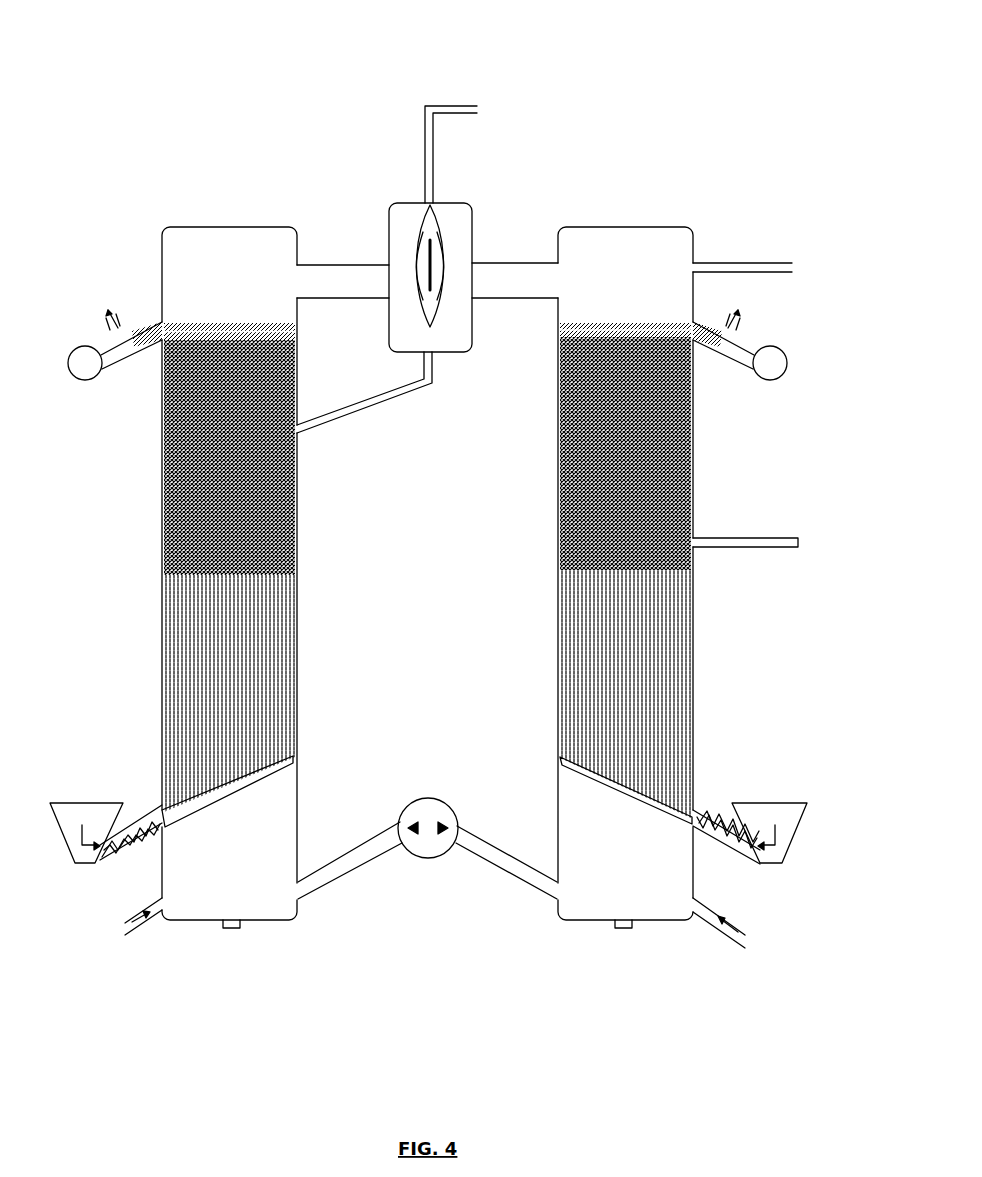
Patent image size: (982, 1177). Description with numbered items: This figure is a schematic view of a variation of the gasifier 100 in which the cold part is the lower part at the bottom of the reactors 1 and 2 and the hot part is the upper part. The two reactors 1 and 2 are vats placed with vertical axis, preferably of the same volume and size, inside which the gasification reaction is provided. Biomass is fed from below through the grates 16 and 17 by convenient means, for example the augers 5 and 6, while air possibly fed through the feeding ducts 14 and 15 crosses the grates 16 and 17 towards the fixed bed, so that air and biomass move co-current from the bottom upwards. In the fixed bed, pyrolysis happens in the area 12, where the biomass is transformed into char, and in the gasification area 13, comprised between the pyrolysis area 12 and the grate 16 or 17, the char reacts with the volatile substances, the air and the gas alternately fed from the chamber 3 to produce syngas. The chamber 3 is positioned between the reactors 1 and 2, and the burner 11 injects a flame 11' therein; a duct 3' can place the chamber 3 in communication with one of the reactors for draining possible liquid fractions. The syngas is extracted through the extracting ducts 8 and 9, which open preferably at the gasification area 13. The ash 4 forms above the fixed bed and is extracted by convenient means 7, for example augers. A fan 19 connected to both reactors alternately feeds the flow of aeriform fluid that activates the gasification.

The gasifier 100 is at (215, 147).
The reactor 1 is at (163, 229).
The reactor 2 is at (672, 228).
The chamber 3 is at (434, 234).
The duct 3' is at (364, 399).
The ash 4 is at (203, 326).
The auger 5 is at (76, 810).
The auger 6 is at (764, 810).
The extracting means 7 is at (80, 358).
The extracting duct 8 is at (765, 265).
The extracting duct 9 is at (755, 543).
The burner 11 is at (465, 154).
The flame 11' is at (405, 277).
The pyrolysis area 12 is at (524, 567).
The gasification area 13 is at (524, 343).
The feeding duct 14 is at (129, 926).
The feeding duct 15 is at (734, 928).
The grate 16 is at (270, 770).
The grate 17 is at (598, 789).
The fan 19 is at (434, 838).